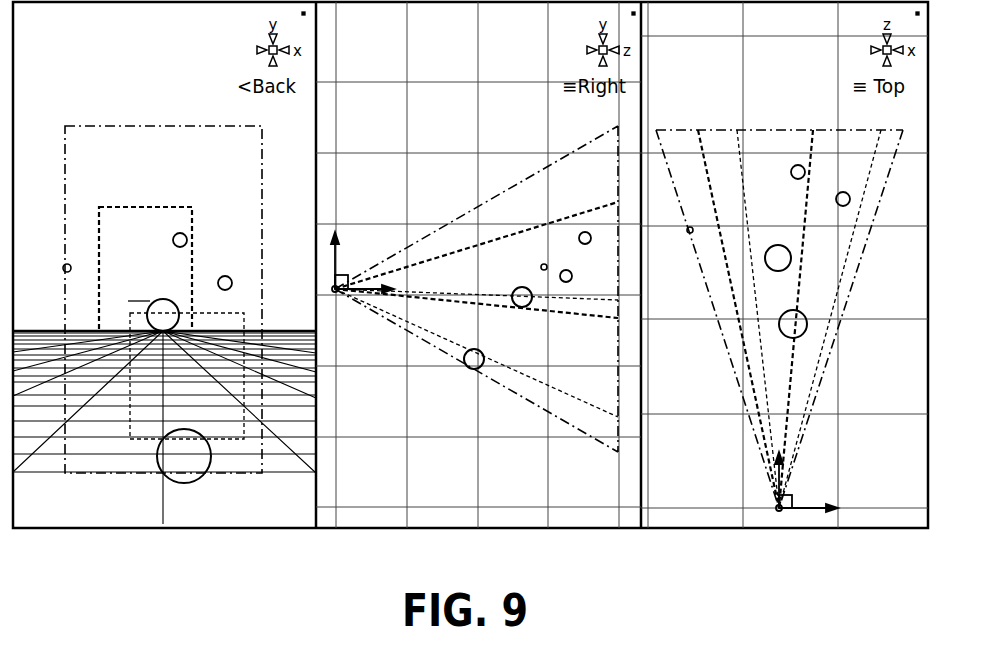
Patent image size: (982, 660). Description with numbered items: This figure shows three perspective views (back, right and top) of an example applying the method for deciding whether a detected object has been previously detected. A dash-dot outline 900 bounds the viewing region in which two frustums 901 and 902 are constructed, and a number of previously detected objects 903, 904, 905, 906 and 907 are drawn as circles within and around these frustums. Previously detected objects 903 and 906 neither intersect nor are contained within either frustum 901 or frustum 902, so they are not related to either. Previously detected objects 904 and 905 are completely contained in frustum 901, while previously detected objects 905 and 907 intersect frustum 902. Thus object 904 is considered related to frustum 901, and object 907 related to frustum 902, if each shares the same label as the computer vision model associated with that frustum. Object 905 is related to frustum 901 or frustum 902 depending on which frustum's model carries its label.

The viewing frustum / view volume 900 is at (113, 126).
The frustum 901 is at (130, 207).
The frustum 902 is at (245, 317).
The previously detected object 903 is at (64, 266).
The previously detected object 904 is at (180, 233).
The previously detected object 905 is at (163, 299).
The previously detected object 906 is at (225, 276).
The previously detected object 907 is at (190, 482).